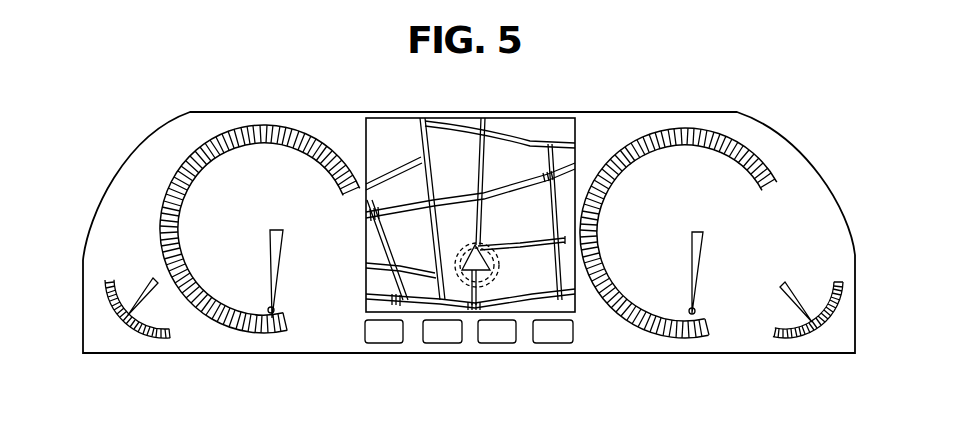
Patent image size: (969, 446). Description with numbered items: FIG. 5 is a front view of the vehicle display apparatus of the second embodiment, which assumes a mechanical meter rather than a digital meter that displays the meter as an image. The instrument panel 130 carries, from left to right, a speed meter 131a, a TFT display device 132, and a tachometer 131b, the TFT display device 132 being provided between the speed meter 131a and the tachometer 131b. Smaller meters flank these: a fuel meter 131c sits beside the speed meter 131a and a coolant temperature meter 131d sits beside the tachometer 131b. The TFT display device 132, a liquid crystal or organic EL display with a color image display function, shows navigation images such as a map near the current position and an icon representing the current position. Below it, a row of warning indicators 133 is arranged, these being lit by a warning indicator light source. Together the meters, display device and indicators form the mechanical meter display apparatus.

The instrument panel display 130 is at (708, 112).
The speed meter 131a is at (303, 302).
The tachometer 131b is at (718, 298).
The fuel meter 131c is at (112, 336).
The coolant temperature meter 131d is at (822, 334).
The TFT display device 132 is at (480, 112).
The warning indicators 133 is at (540, 345).